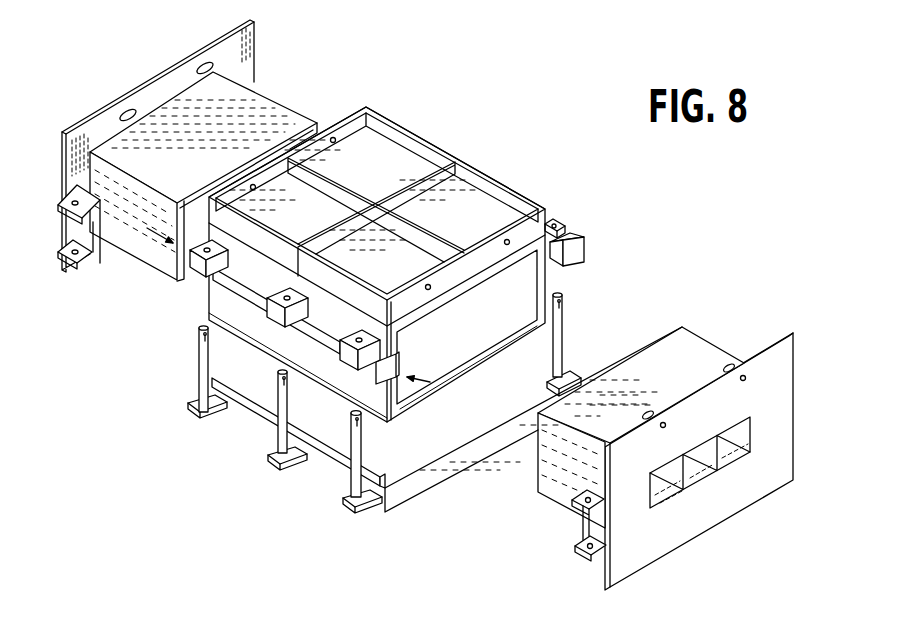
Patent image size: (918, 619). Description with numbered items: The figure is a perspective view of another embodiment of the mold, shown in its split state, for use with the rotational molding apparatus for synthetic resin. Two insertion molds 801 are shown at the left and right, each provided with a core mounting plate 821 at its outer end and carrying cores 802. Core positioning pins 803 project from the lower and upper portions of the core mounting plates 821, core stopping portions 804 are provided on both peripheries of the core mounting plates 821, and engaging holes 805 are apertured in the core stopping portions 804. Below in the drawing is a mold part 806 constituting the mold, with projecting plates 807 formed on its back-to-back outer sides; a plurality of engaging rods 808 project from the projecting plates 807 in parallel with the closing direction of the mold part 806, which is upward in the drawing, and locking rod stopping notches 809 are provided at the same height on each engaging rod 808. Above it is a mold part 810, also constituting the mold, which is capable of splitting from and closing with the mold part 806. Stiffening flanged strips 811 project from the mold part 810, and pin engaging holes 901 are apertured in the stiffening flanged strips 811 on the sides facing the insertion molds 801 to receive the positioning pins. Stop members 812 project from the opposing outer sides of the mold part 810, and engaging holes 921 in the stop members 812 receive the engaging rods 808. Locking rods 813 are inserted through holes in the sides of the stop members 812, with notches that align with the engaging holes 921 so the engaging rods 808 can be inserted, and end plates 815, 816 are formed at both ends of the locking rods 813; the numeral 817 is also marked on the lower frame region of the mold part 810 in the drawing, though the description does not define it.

The insertion mold 801 is at (452, 302).
The core 802 is at (163, 122).
The core positioning pin 803 is at (193, 68).
The core stopping portion 804 is at (72, 208).
The engaging hole 805 is at (60, 214).
The mold part 806 is at (561, 340).
The projecting plate 807 is at (355, 508).
The engaging rod 808 is at (362, 452).
The locking rod stopping notch 809 is at (560, 298).
The mold part 810 is at (467, 198).
The stiffening flanged strip 811 is at (407, 125).
The stop member 812 is at (550, 178).
The locking rod 813 is at (266, 303).
The end plate 815 is at (163, 277).
The end plate 816 is at (612, 260).
The lower frame member 817 is at (468, 374).
The core mounting plate 821 is at (245, 47).
The pin engaging hole 901 is at (334, 138).
The engaging hole 921 is at (341, 352).